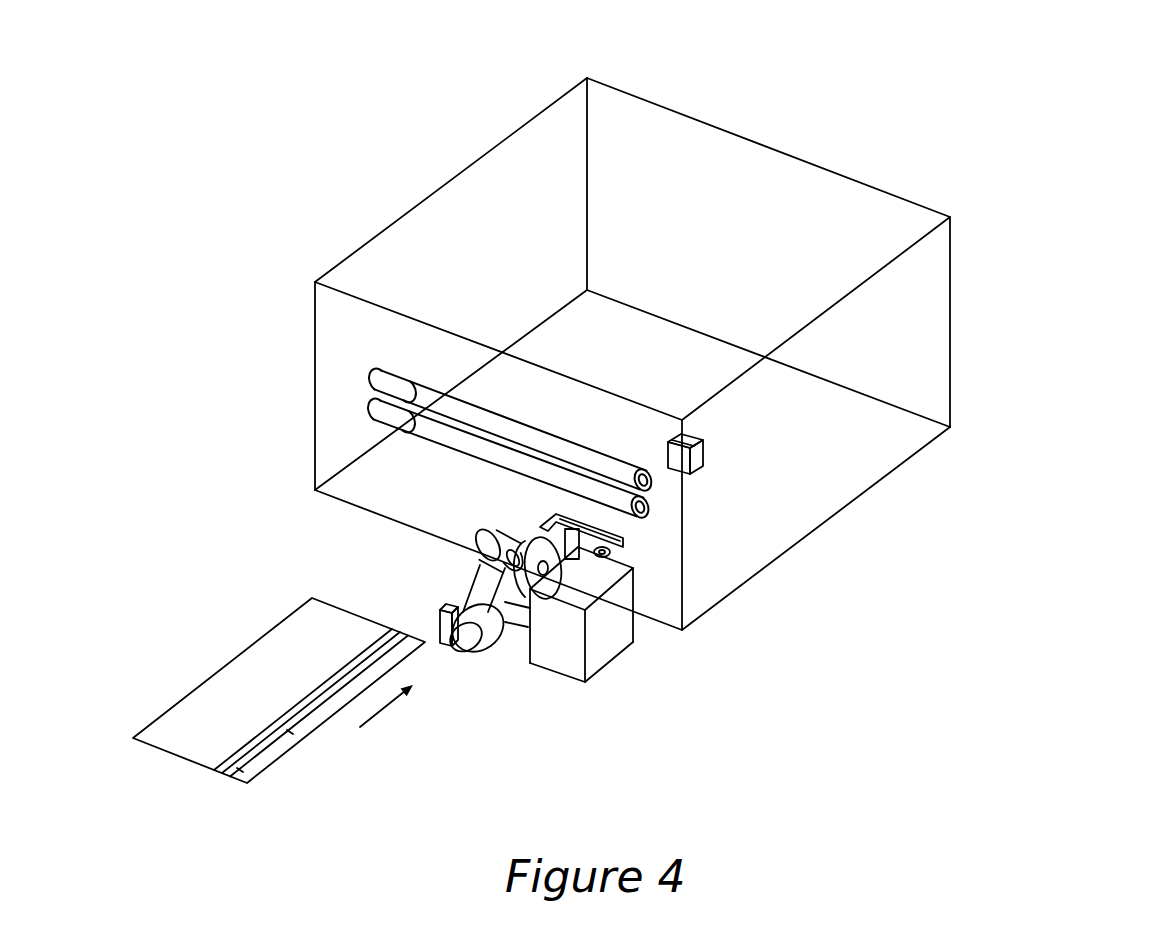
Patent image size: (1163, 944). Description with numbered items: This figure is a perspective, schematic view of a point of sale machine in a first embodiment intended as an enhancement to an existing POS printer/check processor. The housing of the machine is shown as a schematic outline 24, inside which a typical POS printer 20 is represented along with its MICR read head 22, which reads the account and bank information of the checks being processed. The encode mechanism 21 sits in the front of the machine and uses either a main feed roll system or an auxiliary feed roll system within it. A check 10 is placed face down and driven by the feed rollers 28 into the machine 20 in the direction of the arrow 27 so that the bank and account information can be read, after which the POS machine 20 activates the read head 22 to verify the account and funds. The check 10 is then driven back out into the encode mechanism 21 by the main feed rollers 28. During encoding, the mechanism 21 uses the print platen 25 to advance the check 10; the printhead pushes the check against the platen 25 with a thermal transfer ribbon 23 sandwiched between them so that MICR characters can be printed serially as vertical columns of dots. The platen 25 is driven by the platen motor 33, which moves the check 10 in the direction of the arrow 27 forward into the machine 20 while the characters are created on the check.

The check 10 is at (213, 677).
The POS printer 20 is at (1078, 151).
The encode mechanism 21 is at (499, 694).
The MICR read head 22 is at (697, 450).
The thermal transfer ribbon 23 is at (480, 592).
The schematic outline 24 is at (803, 160).
The print platen 25 is at (503, 537).
The arrow 27 is at (375, 712).
The feed rollers 28 is at (528, 437).
The platen motor 33 is at (607, 643).